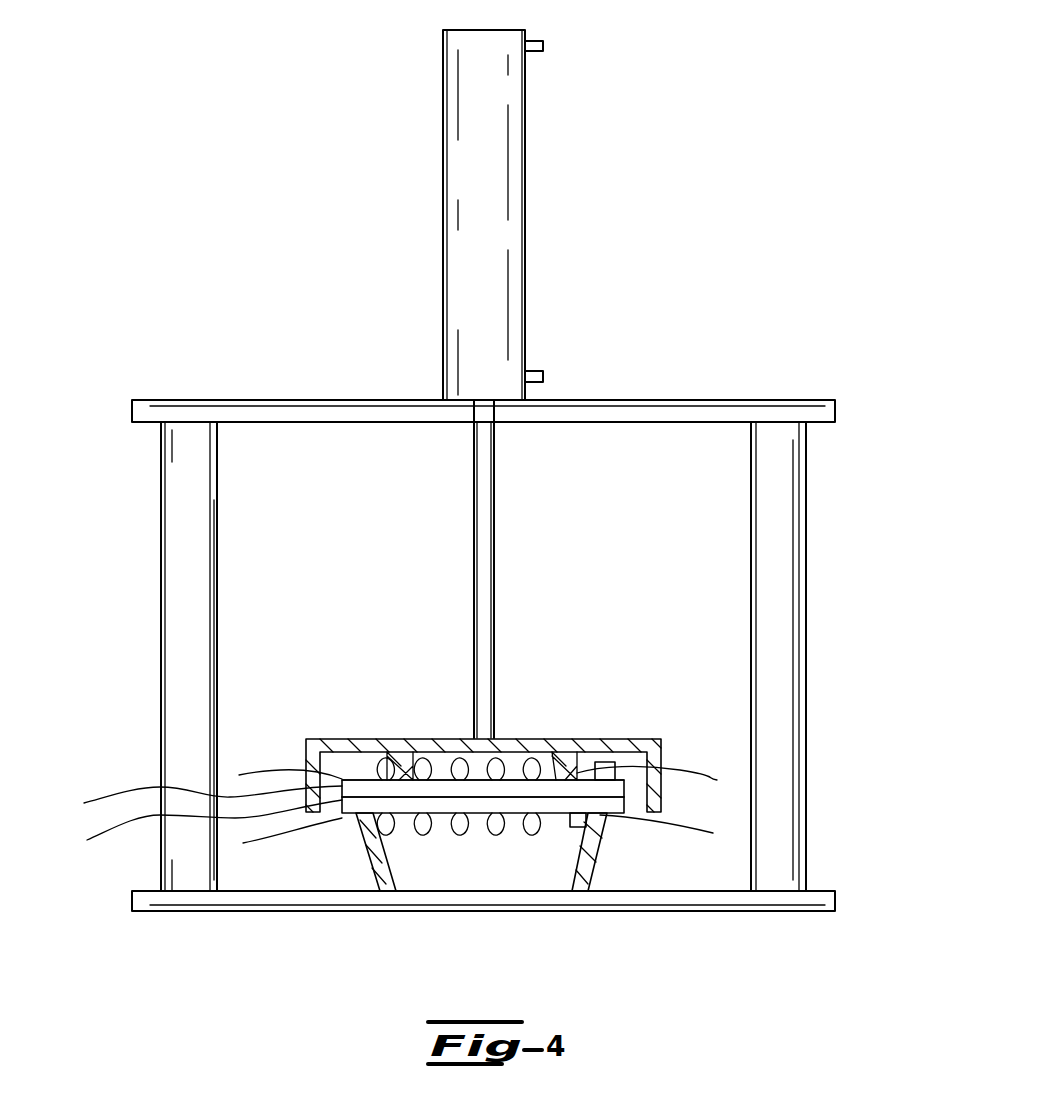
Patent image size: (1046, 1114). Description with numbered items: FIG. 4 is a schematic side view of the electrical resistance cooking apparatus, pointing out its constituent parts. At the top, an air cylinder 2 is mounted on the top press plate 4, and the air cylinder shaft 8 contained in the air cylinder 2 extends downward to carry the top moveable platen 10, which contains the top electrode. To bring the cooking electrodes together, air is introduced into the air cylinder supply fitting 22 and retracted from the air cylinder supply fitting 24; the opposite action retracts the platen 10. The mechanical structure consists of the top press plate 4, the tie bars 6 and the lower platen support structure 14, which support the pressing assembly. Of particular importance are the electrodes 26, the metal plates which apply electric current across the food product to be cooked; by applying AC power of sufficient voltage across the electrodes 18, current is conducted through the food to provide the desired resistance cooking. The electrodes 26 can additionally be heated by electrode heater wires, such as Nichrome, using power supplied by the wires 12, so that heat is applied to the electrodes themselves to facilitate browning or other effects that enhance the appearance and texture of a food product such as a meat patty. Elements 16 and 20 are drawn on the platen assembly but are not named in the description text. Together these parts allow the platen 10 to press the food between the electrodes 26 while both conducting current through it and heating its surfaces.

The air cylinder 2 is at (443, 219).
The top press plate 4 is at (735, 400).
The tie bar 6 is at (218, 568).
The air cylinder shaft 8 is at (494, 568).
The top moveable platen 10 is at (353, 738).
The wires 12 is at (268, 766).
The lower platen support structure 14 is at (378, 871).
The lower plate 16 is at (496, 813).
The electrodes 18 is at (107, 794).
The clamp blocks 20 is at (605, 762).
The air cylinder supply fitting 22 is at (545, 46).
The air cylinder supply fitting 24 is at (545, 377).
The electrodes 26 is at (440, 796).